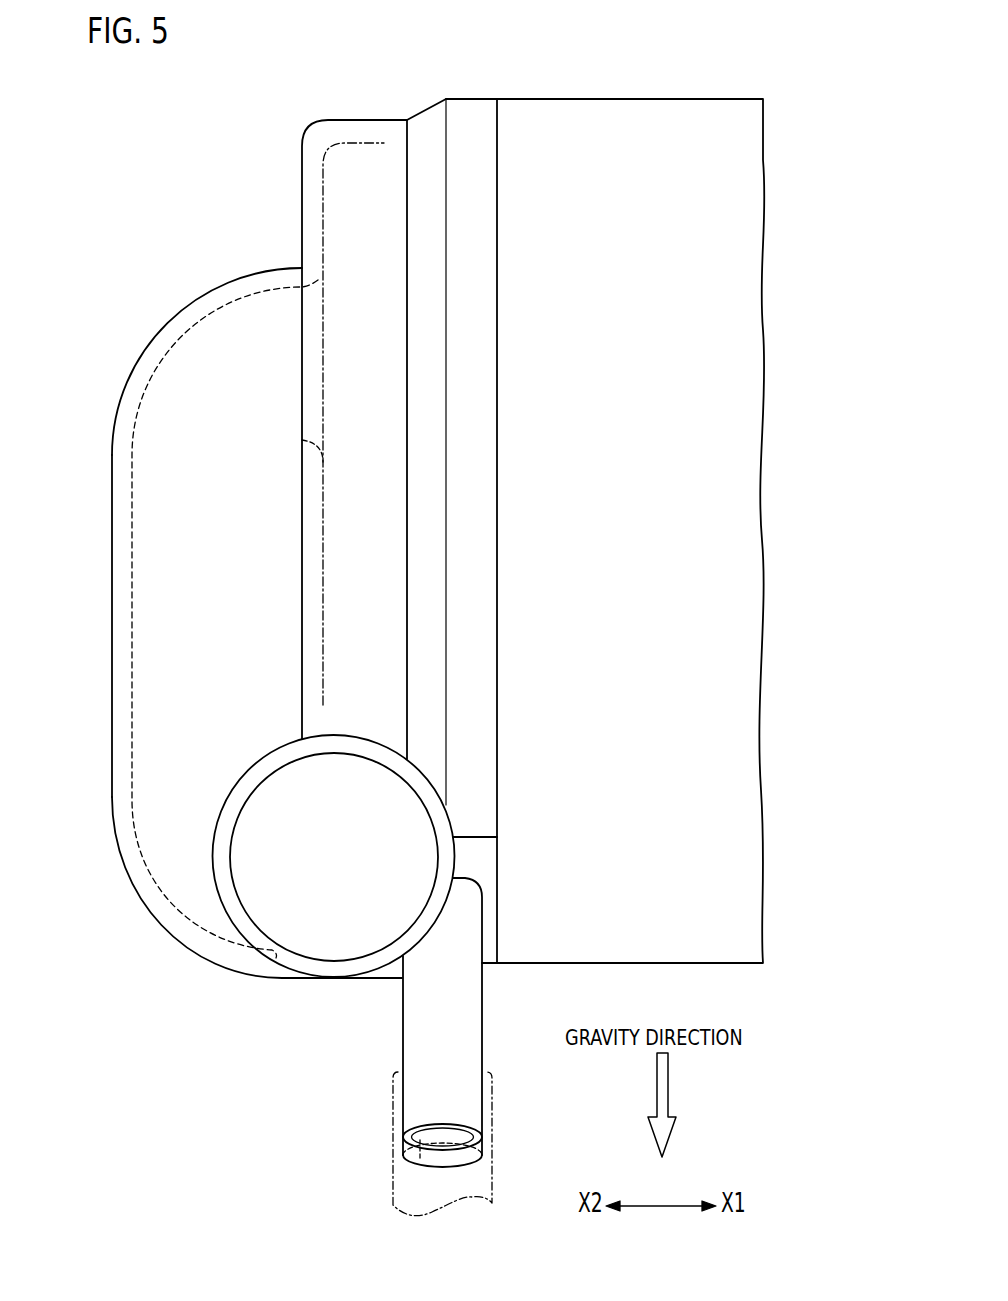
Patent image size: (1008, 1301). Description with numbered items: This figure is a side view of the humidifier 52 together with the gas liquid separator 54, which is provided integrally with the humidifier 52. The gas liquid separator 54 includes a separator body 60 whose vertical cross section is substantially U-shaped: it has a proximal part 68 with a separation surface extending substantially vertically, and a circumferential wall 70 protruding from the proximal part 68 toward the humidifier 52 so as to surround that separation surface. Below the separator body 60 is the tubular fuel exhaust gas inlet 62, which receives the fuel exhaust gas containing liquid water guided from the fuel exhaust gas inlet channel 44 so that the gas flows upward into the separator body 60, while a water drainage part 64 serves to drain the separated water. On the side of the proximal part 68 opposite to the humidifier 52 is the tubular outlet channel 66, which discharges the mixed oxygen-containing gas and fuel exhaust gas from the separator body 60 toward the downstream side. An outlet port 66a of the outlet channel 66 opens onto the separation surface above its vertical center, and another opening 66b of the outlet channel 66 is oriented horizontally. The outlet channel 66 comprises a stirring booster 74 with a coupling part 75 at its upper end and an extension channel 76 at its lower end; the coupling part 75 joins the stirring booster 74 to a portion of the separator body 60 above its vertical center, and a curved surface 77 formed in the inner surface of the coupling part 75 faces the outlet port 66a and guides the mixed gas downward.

The gas liquid separator 54 is at (160, 99).
The separator body 60 is at (304, 86).
The circumferential wall 70 is at (466, 125).
The humidifier 52 is at (633, 118).
The proximal part 68 is at (317, 201).
The curved surface 77 is at (200, 318).
The coupling part 75 is at (158, 335).
The outlet port 66a is at (310, 318).
The stirring booster 74 is at (112, 675).
The outlet channel 66 is at (130, 945).
The extension channel 76 is at (280, 955).
The another opening 66b is at (328, 937).
The water drainage part 64 is at (473, 1106).
The fuel exhaust gas inlet 62 is at (427, 1164).
The fuel exhaust gas inlet channel 44 is at (392, 1195).